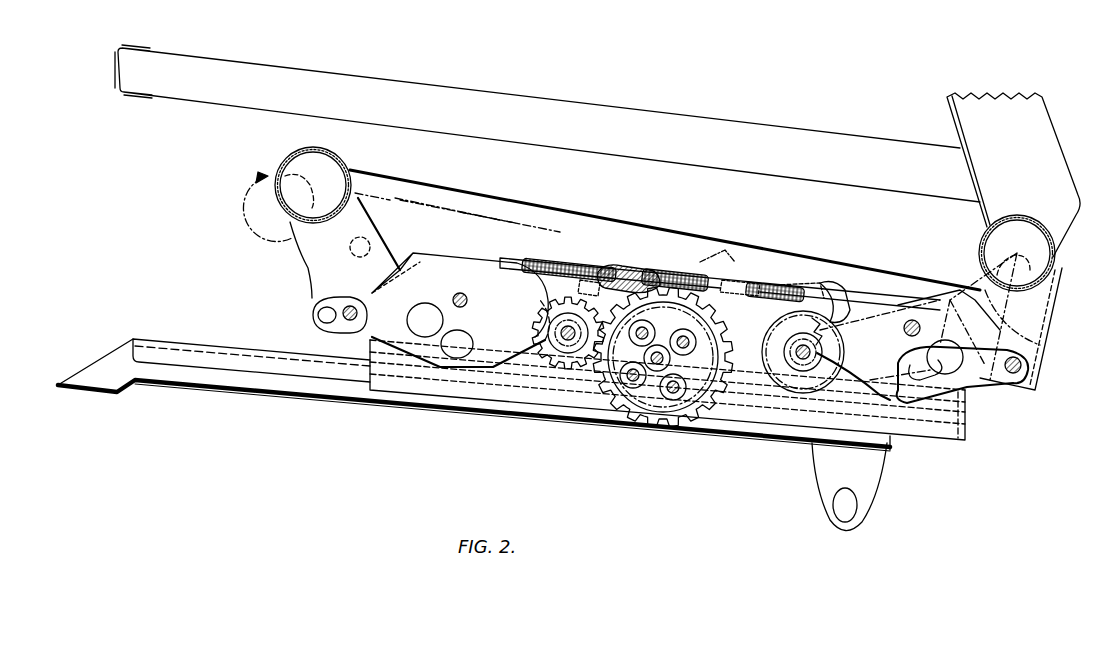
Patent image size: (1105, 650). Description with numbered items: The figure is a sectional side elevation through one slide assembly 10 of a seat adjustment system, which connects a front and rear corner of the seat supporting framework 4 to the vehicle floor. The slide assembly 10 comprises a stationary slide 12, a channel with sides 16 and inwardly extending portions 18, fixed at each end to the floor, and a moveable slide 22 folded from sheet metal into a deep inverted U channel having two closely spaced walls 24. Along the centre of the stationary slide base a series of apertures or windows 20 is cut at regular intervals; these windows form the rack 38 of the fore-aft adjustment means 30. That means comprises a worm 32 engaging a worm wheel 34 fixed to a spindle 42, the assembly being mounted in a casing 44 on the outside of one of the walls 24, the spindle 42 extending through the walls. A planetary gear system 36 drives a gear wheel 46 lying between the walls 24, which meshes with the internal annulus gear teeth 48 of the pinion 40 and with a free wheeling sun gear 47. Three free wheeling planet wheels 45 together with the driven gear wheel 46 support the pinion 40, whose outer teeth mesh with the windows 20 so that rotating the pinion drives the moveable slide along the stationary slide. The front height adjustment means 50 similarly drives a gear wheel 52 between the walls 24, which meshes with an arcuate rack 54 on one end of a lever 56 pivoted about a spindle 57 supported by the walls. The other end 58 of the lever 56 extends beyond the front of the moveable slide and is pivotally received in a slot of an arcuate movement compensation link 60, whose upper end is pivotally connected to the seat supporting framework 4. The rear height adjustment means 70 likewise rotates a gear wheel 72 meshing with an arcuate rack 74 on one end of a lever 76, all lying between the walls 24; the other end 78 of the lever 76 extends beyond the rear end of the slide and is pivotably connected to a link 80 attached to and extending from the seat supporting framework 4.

The seat supporting framework 4 is at (260, 178).
The slide assembly 10 is at (185, 324).
The stationary slide 12 is at (160, 380).
The sides 16 is at (205, 374).
The inwardly extending portions 18 is at (242, 357).
The apertures or windows 20 is at (232, 393).
The moveable slide 22 is at (430, 284).
The walls 24 is at (457, 210).
The fore-aft adjustment means 30 is at (673, 266).
The worm 32 is at (710, 283).
The worm wheel 34 is at (648, 287).
The planetary gear system 36 is at (657, 410).
The rack 38 is at (600, 420).
The pinion 40 is at (654, 368).
The spindle 42 is at (753, 297).
The casing 44 is at (648, 275).
The free wheeling planet wheels 45 is at (598, 428).
The gear wheel 46 is at (727, 284).
The sun gear 47 is at (712, 368).
The internal annulus gear teeth 48 is at (637, 420).
The front height adjustment means 50 is at (542, 250).
The gear wheel 52 is at (605, 283).
The arcuate rack 54 is at (572, 310).
The lever 56 is at (498, 345).
The spindle 57 is at (459, 292).
The other end of the lever 58 is at (386, 312).
The arcuate movement compensation link 60 is at (317, 256).
The rear height adjustment means 70 is at (805, 276).
The gear wheel 72 is at (783, 352).
The arcuate rack 74 is at (838, 290).
The lever 76 is at (940, 368).
The other end of the lever 78 is at (1025, 383).
The link 80 is at (1033, 317).